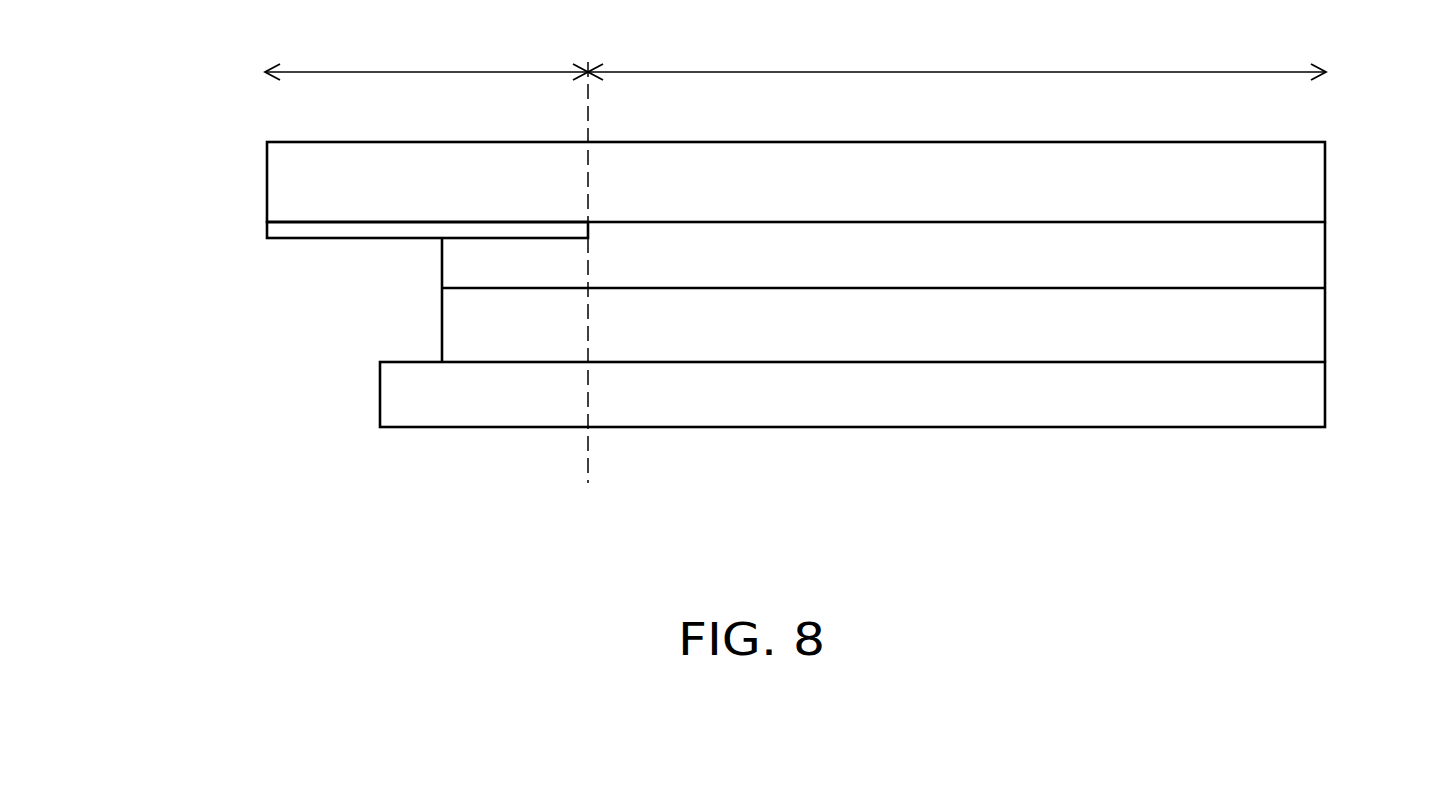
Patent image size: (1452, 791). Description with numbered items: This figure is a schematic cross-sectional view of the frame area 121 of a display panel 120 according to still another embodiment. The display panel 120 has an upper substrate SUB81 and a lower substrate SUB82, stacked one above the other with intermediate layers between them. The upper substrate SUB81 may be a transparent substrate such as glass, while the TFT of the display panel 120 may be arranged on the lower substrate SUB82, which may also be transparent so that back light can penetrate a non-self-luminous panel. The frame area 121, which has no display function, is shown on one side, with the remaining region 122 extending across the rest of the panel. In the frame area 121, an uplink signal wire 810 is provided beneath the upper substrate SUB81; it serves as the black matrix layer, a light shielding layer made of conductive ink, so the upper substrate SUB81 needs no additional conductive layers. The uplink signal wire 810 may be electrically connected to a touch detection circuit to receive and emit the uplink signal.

The display panel 120 is at (759, 349).
The frame area 121 is at (426, 57).
The display region 122 is at (957, 56).
The uplink signal wire 810 is at (280, 230).
The upper substrate SUB81 is at (1313, 182).
The lower substrate SUB82 is at (1313, 399).